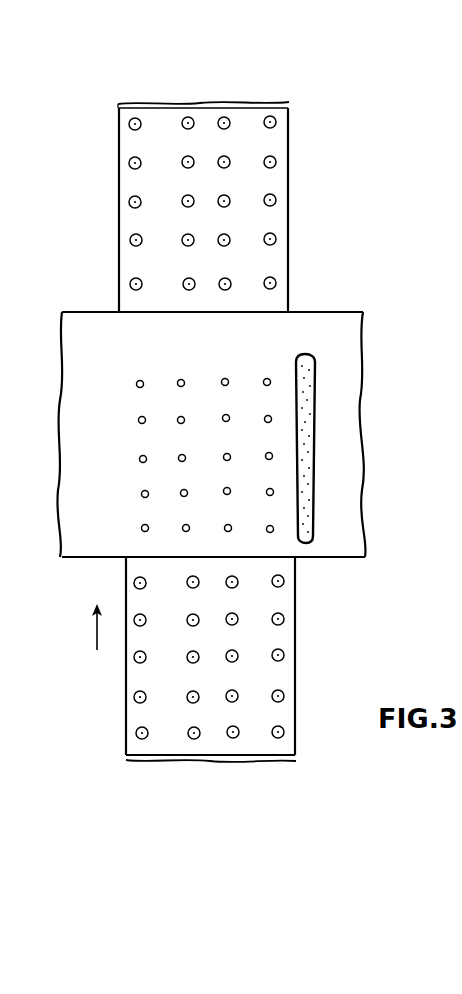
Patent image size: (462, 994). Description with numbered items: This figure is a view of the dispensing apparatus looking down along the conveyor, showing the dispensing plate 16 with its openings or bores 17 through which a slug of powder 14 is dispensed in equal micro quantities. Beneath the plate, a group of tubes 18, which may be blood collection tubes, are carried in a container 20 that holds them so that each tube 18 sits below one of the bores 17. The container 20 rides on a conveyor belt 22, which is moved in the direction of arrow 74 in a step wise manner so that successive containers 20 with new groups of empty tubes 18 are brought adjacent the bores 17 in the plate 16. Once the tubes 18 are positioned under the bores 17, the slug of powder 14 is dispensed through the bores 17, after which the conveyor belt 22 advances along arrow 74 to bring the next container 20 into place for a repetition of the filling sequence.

The slug of powder 14 is at (307, 445).
The dispensing plate 16 is at (344, 336).
The openings 17 is at (138, 386).
The container 18 is at (226, 160).
The container 20 is at (278, 223).
The conveyor belt 22 is at (120, 108).
The arrow 74 is at (96, 630).